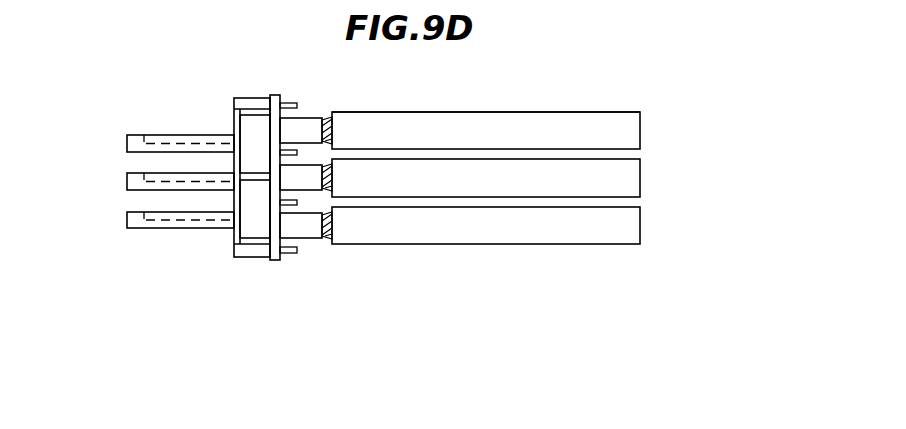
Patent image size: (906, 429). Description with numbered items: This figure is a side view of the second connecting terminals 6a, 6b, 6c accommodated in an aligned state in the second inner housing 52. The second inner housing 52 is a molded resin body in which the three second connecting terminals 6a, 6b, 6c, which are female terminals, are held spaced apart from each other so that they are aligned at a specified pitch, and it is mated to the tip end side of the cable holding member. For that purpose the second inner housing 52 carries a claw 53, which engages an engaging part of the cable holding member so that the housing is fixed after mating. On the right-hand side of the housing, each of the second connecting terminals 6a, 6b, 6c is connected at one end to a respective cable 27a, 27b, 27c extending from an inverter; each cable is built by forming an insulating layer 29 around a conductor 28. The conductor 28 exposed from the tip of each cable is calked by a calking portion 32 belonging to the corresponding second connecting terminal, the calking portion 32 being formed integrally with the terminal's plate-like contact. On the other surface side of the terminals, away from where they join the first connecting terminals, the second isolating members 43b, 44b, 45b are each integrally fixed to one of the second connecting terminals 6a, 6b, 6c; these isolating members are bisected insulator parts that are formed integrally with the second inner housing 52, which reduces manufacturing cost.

The second connecting terminal 6a is at (183, 138).
The second connecting terminal 6b is at (165, 178).
The second connecting terminal 6c is at (153, 215).
The cable 27a is at (643, 131).
The cable 27b is at (643, 178).
The cable 27c is at (643, 227).
The conductor 28 is at (326, 240).
The insulating layer 29 is at (466, 113).
The calking portion 32 is at (303, 118).
The second isolating member 43b is at (141, 140).
The second isolating member 44b is at (141, 145).
The second isolating member 45b is at (141, 177).
The second inner housing 52 is at (253, 100).
The claw 53 is at (285, 253).